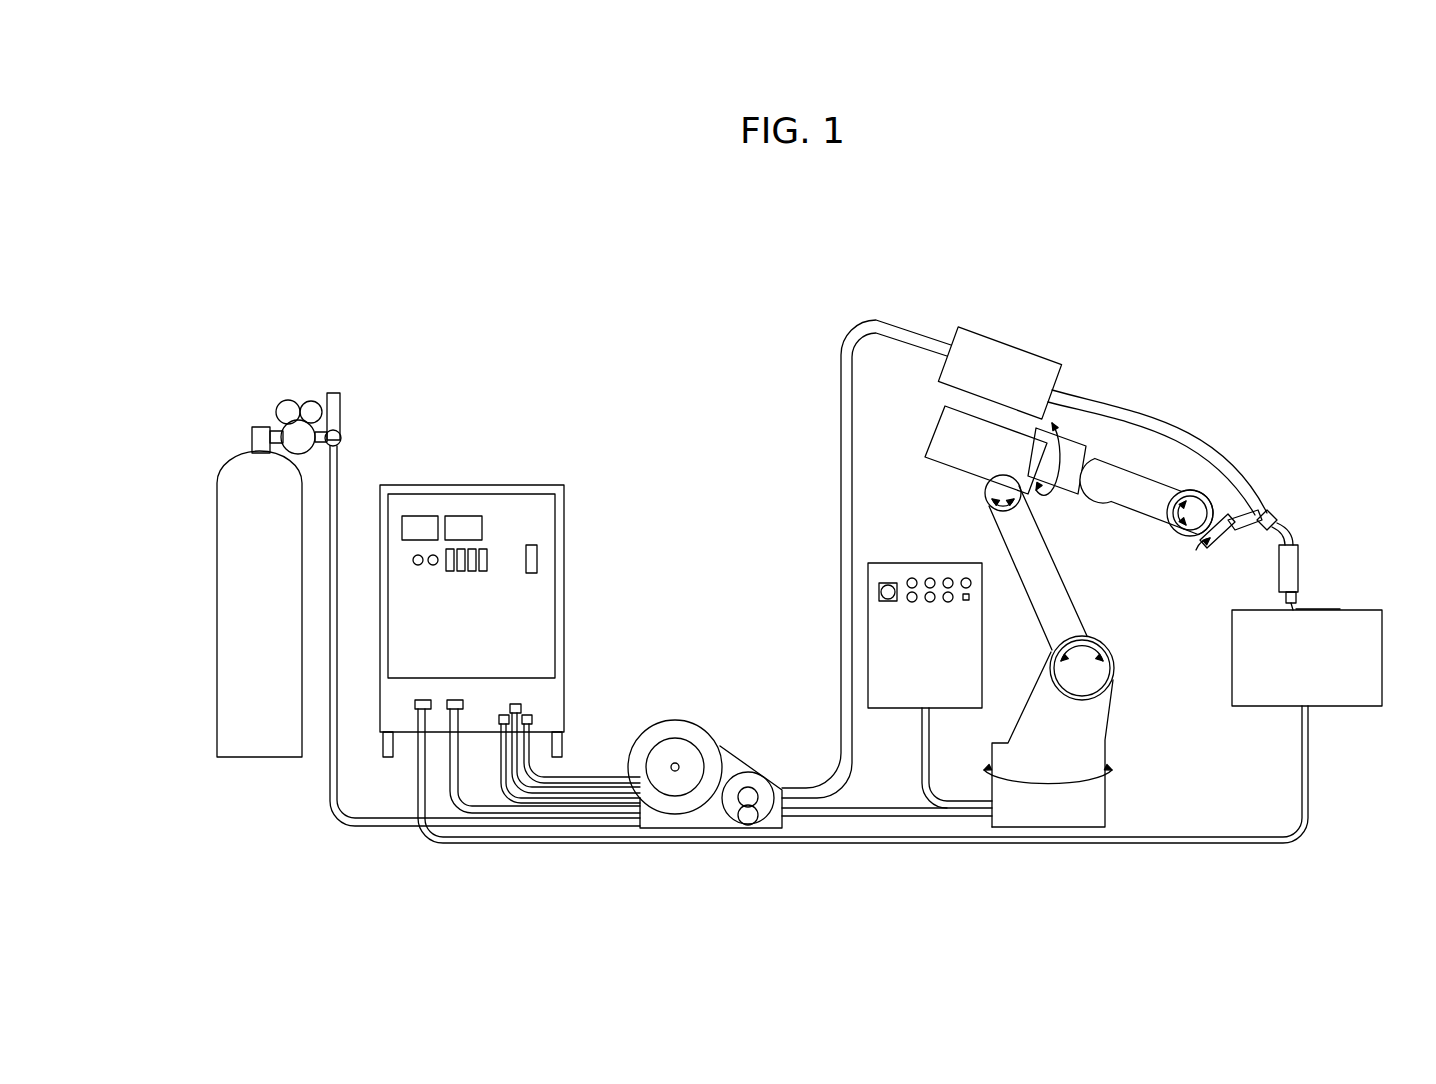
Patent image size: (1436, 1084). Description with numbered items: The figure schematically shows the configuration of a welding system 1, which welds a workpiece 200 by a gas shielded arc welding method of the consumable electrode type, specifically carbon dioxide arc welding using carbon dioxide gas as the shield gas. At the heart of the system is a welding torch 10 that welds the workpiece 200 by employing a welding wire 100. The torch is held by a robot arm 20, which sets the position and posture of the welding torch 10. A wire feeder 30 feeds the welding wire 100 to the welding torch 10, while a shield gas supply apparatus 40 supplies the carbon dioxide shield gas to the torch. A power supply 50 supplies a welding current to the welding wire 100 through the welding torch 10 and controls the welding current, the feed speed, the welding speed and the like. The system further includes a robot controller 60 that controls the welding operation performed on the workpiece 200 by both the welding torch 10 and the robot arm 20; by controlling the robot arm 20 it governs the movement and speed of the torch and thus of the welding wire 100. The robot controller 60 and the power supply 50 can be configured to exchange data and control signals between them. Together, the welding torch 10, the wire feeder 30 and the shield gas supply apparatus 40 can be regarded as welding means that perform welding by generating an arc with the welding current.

The welding system 1 is at (1238, 240).
The welding torch 10 is at (1300, 563).
The robot arm 20 is at (934, 424).
The wire feeder 30 is at (745, 698).
The shield gas supply apparatus 40 is at (205, 412).
The power supply 50 is at (618, 455).
The robot controller 60 is at (917, 562).
The welding wire 100 is at (1300, 608).
The workpiece 200 is at (1232, 656).